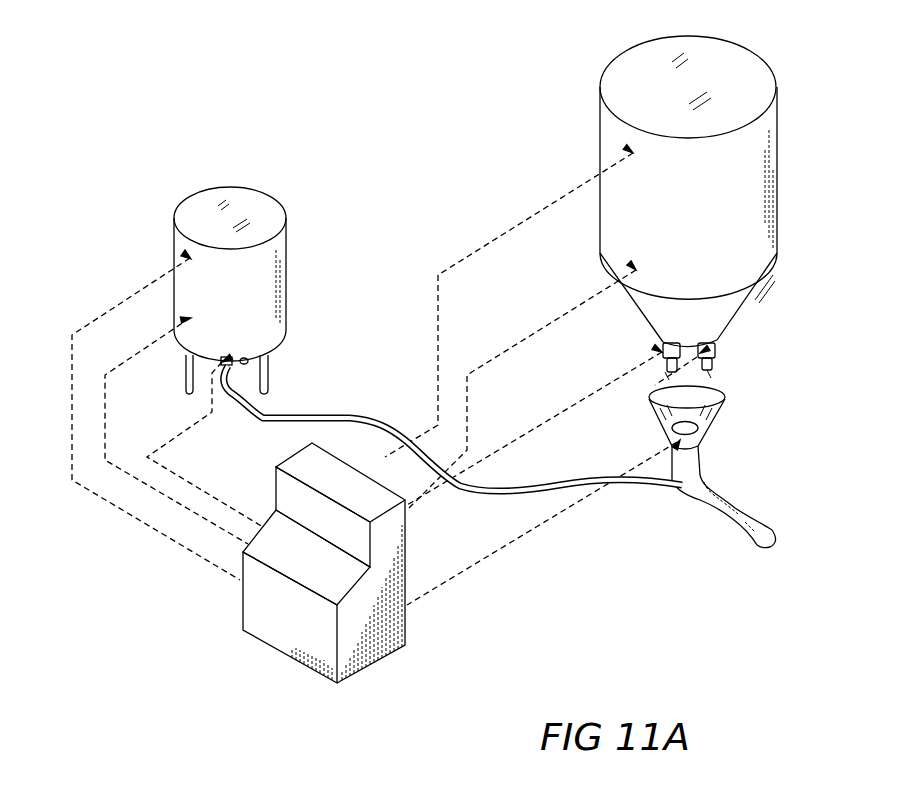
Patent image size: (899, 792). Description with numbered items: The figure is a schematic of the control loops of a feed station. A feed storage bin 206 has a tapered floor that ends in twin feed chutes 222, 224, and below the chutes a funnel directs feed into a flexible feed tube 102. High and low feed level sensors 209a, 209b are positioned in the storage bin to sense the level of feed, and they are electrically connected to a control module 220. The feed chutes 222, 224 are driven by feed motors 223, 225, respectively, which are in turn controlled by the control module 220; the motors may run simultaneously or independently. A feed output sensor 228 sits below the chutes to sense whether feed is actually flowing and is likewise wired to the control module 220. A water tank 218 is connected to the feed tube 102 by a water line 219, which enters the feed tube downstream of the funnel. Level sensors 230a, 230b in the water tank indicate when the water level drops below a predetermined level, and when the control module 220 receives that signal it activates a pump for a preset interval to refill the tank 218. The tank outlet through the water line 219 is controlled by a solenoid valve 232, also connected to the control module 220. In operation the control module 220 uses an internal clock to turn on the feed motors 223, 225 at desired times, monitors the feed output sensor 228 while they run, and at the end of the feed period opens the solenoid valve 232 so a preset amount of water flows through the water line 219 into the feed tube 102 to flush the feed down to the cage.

The flexible feed tube 102 is at (745, 520).
The feed storage bin 206 is at (777, 143).
The high feed level sensor 209a is at (633, 153).
The low feed level sensor 209b is at (636, 270).
The water tank 218 is at (288, 258).
The water line 219 is at (498, 498).
The control module 220 is at (312, 629).
The feed chute 222 is at (665, 372).
The feed motor 223 is at (662, 352).
The feed chute 224 is at (713, 362).
The feed motor 225 is at (700, 353).
The feed output sensor 228 is at (680, 442).
The low level sensor 230a is at (190, 258).
The low level sensor 230b is at (190, 319).
The solenoid valve 232 is at (232, 358).